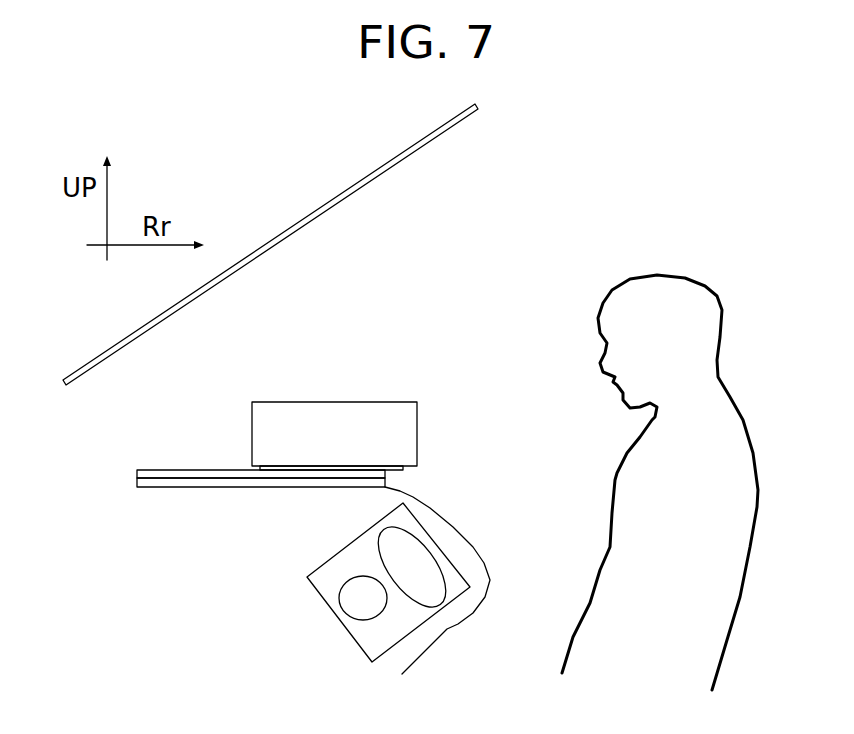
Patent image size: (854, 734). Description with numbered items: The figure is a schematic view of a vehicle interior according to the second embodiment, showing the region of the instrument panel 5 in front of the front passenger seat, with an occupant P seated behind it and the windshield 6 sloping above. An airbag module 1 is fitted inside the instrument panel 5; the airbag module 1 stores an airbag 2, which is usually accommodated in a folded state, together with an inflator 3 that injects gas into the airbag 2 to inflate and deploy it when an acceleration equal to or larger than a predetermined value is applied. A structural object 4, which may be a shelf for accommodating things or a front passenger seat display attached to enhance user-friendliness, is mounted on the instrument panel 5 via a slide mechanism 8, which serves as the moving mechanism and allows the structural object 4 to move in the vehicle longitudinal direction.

The airbag module 1 is at (303, 547).
The airbag 2 is at (418, 587).
The inflator 3 is at (337, 617).
The structural object 4 is at (308, 415).
The instrument panel 5 is at (223, 493).
The windshield 6 is at (335, 235).
The slide mechanism 8 is at (125, 460).
The passenger P is at (713, 430).